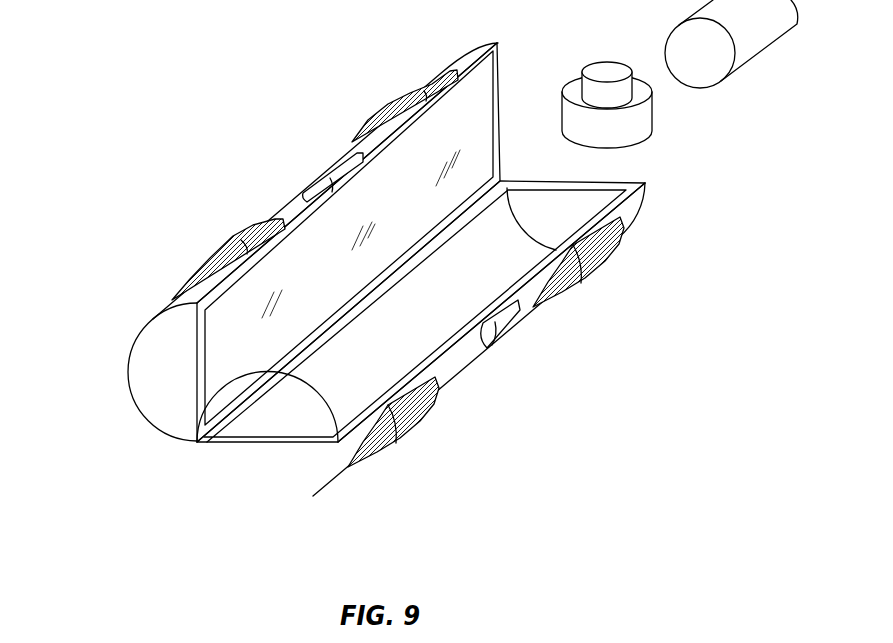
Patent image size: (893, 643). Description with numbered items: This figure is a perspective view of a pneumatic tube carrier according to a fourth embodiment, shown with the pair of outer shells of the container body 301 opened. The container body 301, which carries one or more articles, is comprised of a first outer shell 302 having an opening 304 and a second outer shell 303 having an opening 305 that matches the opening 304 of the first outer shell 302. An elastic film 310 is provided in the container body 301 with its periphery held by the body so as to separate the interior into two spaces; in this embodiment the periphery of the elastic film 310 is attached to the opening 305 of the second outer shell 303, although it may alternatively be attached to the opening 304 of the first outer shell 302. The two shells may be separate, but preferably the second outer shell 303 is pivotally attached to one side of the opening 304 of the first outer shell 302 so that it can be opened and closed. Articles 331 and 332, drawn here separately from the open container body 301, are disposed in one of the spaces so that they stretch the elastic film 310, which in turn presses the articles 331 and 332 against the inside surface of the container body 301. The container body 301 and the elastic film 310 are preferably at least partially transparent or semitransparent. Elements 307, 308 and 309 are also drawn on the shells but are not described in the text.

The container body 301 is at (351, 301).
The first outer shell 302 is at (307, 507).
The second outer shell 303 is at (123, 358).
The opening 304 is at (465, 332).
The opening 305 is at (258, 390).
The latch tab 307 is at (333, 167).
The latch fin 308 is at (393, 100).
The latch fin 309 is at (222, 247).
The elastic film 310 is at (310, 202).
The article 331 is at (650, 117).
The article 332 is at (757, 40).